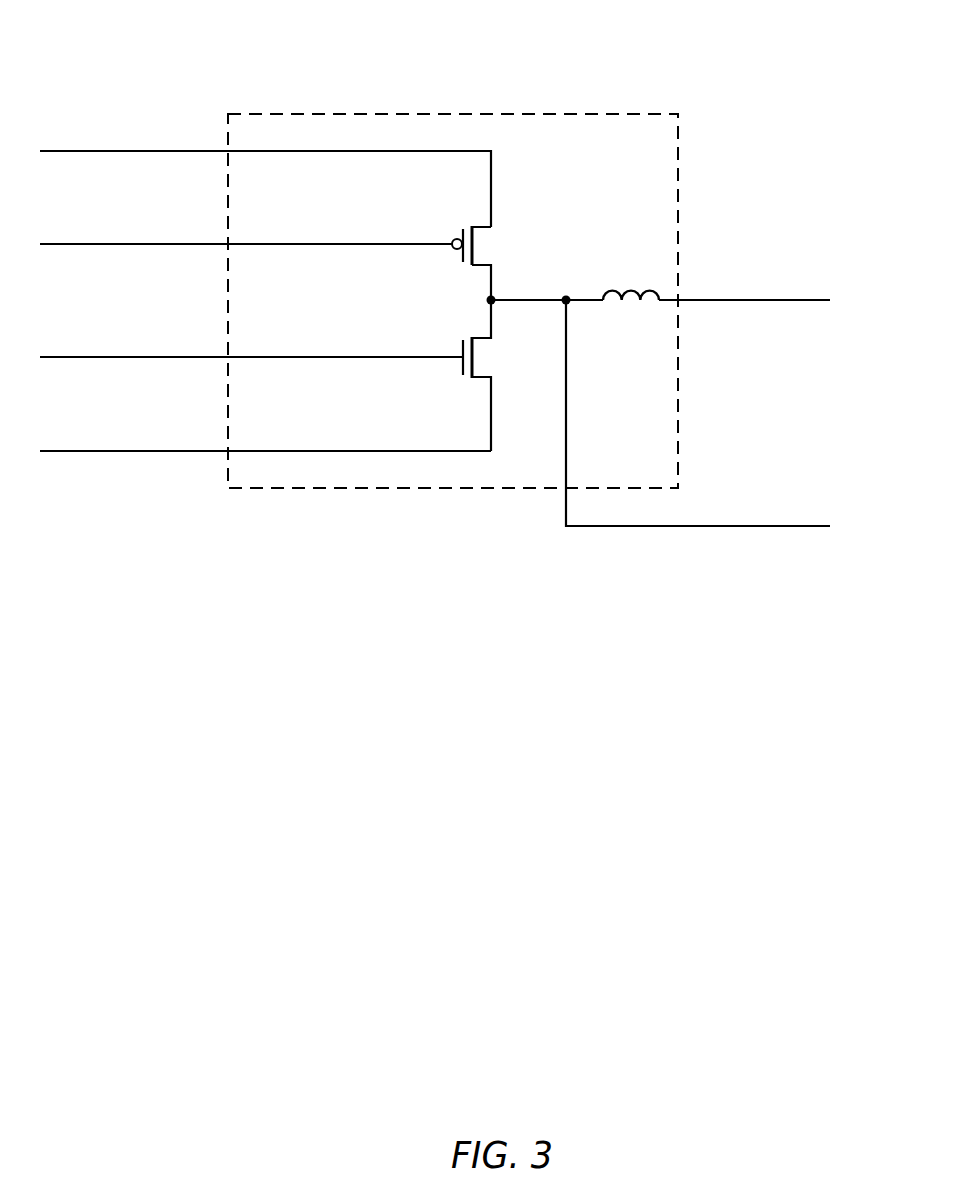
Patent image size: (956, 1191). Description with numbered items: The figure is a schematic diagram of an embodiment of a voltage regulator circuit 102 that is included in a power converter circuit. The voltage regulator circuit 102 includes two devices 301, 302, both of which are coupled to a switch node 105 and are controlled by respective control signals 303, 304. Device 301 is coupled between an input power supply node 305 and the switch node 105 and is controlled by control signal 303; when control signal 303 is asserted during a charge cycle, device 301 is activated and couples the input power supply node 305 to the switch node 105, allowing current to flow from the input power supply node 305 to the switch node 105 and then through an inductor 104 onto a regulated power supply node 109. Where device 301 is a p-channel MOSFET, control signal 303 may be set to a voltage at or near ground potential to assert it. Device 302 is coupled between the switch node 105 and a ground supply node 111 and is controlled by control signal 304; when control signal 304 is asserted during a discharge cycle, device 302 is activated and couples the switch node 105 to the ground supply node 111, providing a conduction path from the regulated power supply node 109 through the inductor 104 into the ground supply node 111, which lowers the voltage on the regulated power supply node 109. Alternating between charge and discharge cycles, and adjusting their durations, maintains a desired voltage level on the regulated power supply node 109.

The voltage regulator circuit 102 is at (628, 113).
The inductor 104 is at (651, 289).
The switch node 105 is at (659, 424).
The regulated power supply node 109 is at (745, 274).
The ground supply node 111 is at (265, 438).
The device 301 is at (489, 246).
The device 302 is at (485, 359).
The control signal 303 is at (246, 244).
The control signal 304 is at (251, 360).
The input power supply node 305 is at (265, 150).